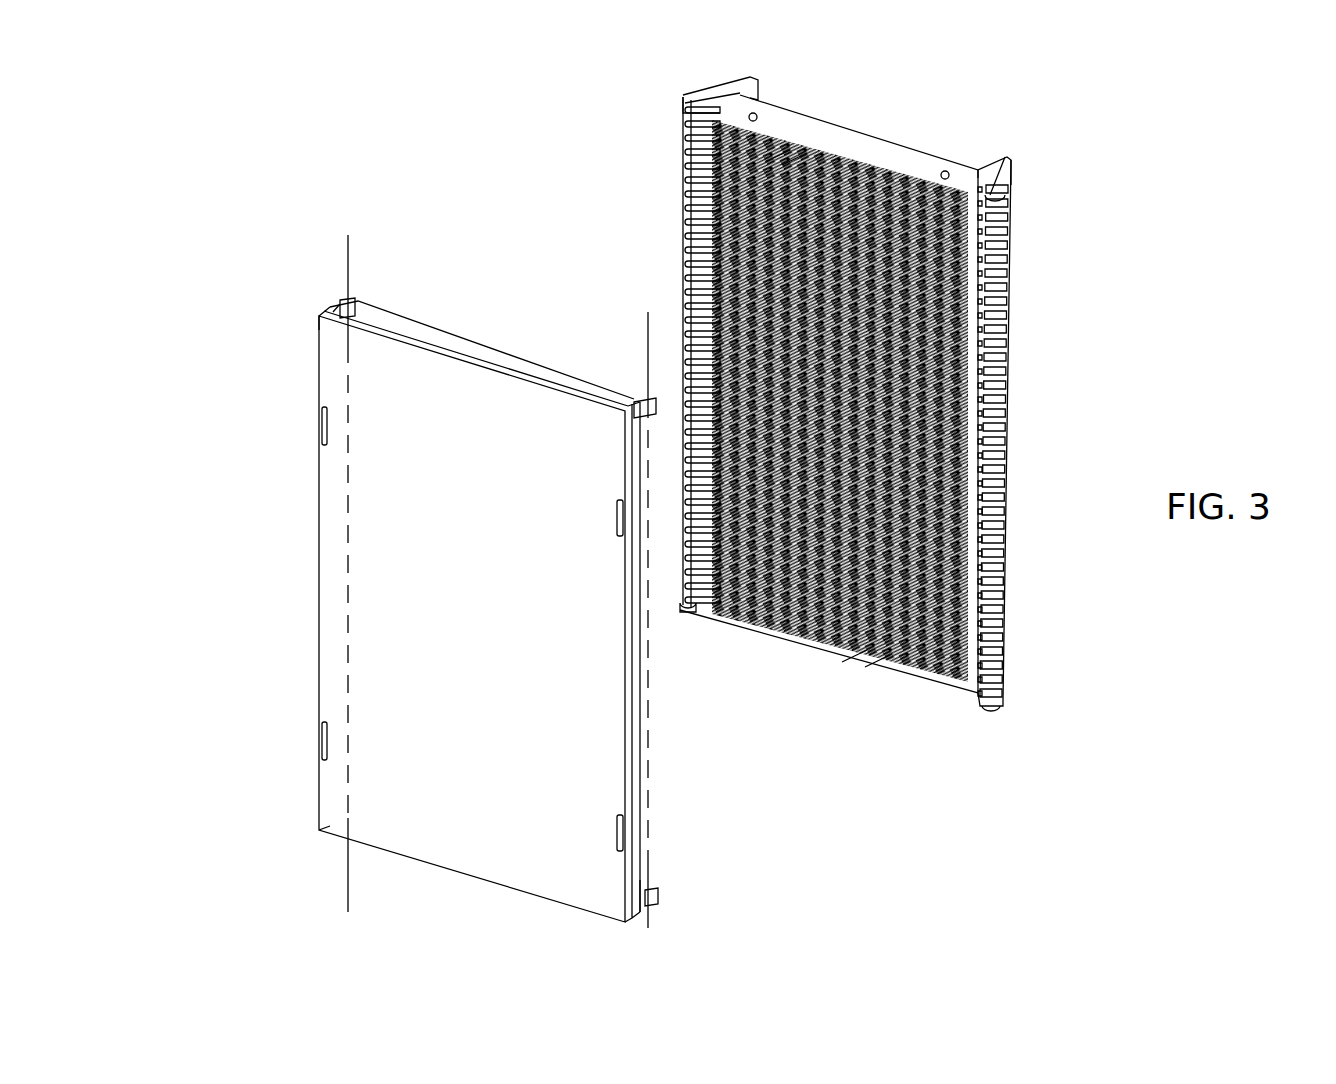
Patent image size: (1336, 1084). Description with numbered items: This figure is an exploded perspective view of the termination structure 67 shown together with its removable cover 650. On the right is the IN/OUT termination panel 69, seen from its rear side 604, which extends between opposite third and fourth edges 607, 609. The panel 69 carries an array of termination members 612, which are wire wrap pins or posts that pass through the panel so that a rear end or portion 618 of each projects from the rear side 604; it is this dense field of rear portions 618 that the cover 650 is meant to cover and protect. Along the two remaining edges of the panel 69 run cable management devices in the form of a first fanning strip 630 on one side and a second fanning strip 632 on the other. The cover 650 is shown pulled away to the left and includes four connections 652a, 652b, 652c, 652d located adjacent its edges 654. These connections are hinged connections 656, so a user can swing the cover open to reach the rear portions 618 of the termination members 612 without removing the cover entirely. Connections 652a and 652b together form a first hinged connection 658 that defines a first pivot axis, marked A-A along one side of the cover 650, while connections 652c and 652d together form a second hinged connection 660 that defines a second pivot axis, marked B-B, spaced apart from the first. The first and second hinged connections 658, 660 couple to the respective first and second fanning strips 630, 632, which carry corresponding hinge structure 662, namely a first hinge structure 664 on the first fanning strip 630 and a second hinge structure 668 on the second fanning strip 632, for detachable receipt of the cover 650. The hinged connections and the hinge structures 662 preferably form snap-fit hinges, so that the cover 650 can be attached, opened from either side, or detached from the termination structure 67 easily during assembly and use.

The termination structure 67 is at (428, 163).
The IN/OUT termination panel 69 is at (840, 128).
The rear side 604 is at (958, 675).
The third edge 607 is at (870, 140).
The fourth edge 609 is at (810, 640).
The termination members 612 is at (817, 152).
The rear end or portion 618 is at (890, 655).
The first fanning strip 630 is at (700, 166).
The second fanning strip 632 is at (990, 552).
The cover 650 is at (444, 295).
The connection 652a is at (343, 312).
The connection 652b is at (282, 820).
The hinged connection 652c is at (642, 400).
The hinged connection 652d is at (660, 897).
The edges 654 is at (332, 590).
The hinged connections 656 is at (243, 343).
The first hinged connection 658 is at (288, 323).
The second hinged connection 660 is at (670, 851).
The hinge structure 662 is at (688, 100).
The first hinge structure 664 is at (622, 113).
The second hinge structure 668 is at (1058, 670).